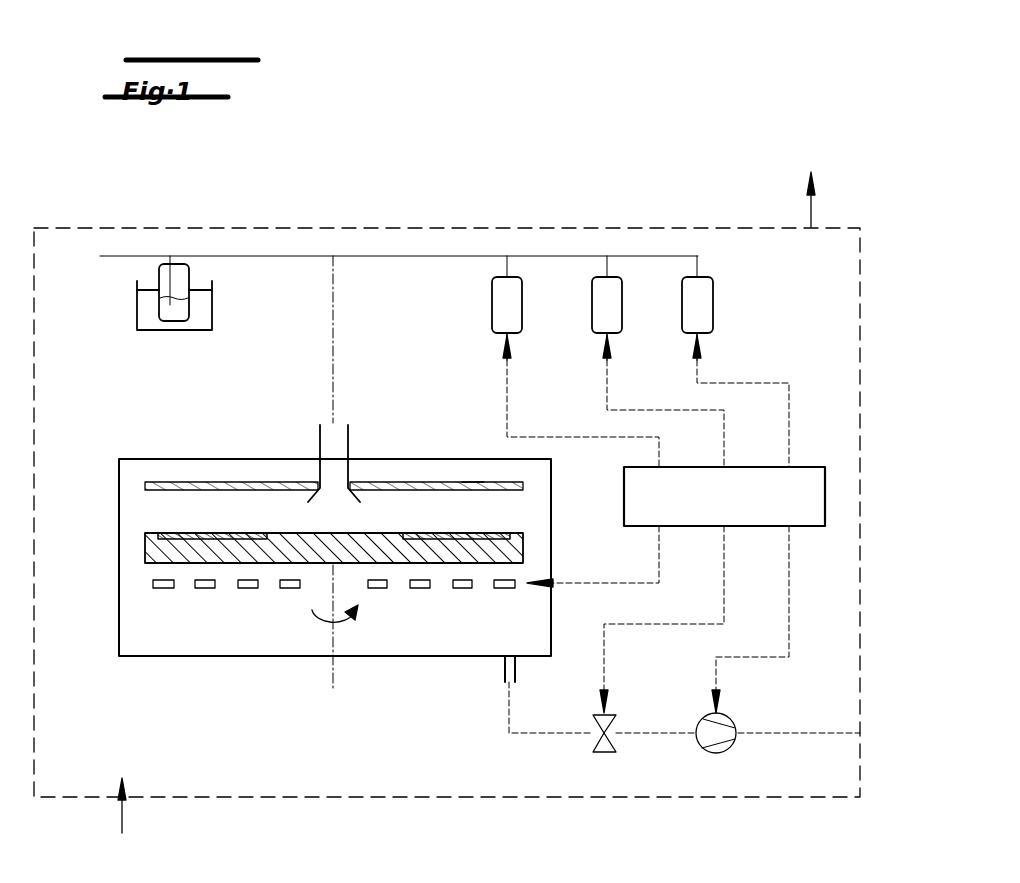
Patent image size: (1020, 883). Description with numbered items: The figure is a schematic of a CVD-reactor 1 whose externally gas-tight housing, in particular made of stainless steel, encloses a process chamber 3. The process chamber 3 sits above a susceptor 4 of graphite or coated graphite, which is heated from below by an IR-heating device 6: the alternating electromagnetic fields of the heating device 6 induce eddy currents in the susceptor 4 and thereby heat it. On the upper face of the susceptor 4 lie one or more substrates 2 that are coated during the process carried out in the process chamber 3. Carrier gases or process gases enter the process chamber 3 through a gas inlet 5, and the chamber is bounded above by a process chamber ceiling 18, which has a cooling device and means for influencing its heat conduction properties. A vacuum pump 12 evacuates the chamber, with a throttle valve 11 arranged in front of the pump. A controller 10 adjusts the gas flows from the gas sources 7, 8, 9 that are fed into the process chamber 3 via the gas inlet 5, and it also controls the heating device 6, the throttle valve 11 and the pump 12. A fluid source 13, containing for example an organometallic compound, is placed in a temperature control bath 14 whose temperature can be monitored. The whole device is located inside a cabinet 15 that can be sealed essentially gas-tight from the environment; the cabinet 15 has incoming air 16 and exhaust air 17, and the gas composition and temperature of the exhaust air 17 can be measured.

The CVD-reactor 1 is at (138, 465).
The substrate 2 is at (165, 533).
The process chamber 3 is at (213, 508).
The susceptor 4 is at (168, 561).
The gas inlet 5 is at (335, 450).
The IR-heating device 6 is at (247, 589).
The gas source 7 is at (503, 300).
The gas source 8 is at (603, 303).
The gas source 9 is at (703, 305).
The controller 10 is at (793, 500).
The throttle valve 11 is at (600, 752).
The vacuum pump 12 is at (716, 742).
The fluid source 13 is at (180, 298).
The temperature control bath 14 is at (203, 311).
The cabinet 15 is at (67, 756).
The incoming air 16 is at (131, 824).
The exhaust air 17 is at (815, 213).
The process chamber ceiling 18 is at (472, 485).